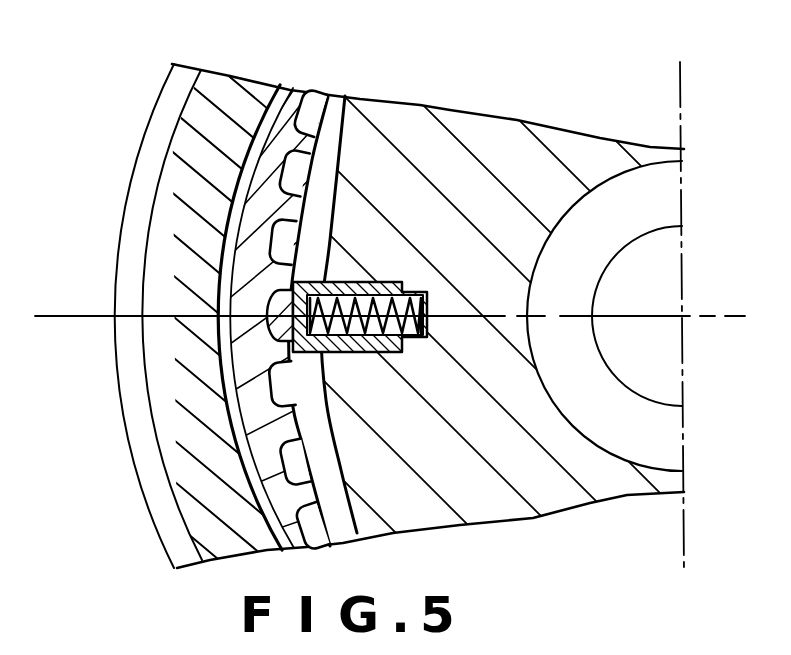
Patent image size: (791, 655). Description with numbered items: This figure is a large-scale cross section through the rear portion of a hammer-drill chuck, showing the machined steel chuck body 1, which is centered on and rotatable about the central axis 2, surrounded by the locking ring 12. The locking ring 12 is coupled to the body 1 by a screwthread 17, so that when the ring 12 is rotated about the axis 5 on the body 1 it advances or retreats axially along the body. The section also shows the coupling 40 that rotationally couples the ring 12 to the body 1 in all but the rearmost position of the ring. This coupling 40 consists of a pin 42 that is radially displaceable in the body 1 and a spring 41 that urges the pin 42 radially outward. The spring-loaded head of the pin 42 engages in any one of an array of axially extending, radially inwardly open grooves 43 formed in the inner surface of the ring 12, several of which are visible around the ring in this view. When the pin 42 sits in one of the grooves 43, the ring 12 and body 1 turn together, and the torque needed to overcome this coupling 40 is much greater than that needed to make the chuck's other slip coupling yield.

The chuck body 1 is at (415, 128).
The axis 2 is at (647, 267).
The axis 5 is at (684, 322).
The locking ring 12 is at (292, 125).
The screwthread 17 is at (283, 100).
The coupling 40 is at (368, 268).
The spring 41 is at (428, 288).
The pin 42 is at (332, 398).
The grooves 43 is at (272, 232).